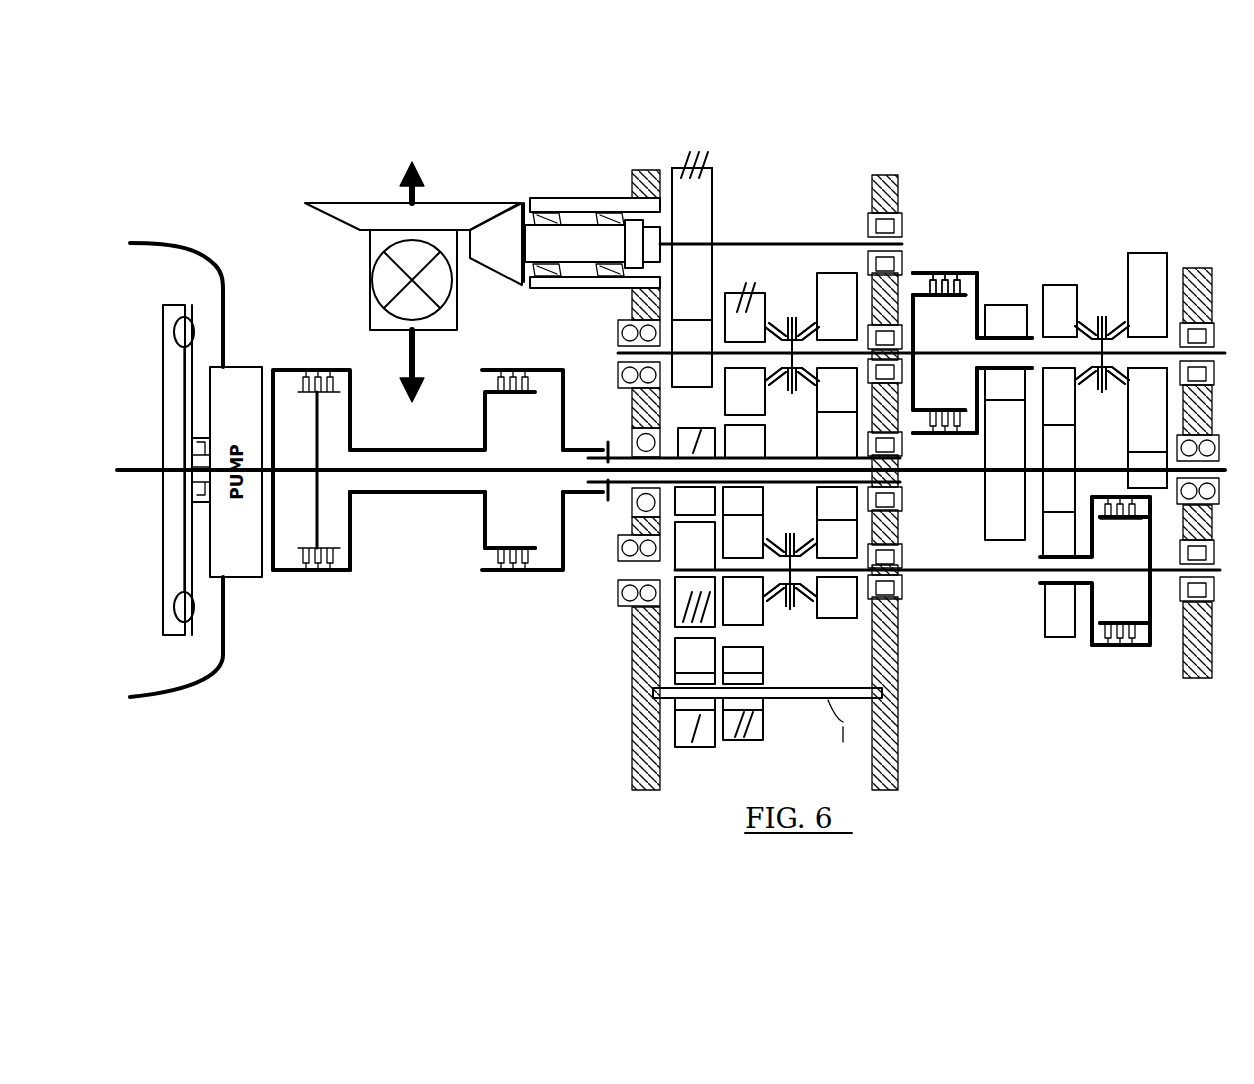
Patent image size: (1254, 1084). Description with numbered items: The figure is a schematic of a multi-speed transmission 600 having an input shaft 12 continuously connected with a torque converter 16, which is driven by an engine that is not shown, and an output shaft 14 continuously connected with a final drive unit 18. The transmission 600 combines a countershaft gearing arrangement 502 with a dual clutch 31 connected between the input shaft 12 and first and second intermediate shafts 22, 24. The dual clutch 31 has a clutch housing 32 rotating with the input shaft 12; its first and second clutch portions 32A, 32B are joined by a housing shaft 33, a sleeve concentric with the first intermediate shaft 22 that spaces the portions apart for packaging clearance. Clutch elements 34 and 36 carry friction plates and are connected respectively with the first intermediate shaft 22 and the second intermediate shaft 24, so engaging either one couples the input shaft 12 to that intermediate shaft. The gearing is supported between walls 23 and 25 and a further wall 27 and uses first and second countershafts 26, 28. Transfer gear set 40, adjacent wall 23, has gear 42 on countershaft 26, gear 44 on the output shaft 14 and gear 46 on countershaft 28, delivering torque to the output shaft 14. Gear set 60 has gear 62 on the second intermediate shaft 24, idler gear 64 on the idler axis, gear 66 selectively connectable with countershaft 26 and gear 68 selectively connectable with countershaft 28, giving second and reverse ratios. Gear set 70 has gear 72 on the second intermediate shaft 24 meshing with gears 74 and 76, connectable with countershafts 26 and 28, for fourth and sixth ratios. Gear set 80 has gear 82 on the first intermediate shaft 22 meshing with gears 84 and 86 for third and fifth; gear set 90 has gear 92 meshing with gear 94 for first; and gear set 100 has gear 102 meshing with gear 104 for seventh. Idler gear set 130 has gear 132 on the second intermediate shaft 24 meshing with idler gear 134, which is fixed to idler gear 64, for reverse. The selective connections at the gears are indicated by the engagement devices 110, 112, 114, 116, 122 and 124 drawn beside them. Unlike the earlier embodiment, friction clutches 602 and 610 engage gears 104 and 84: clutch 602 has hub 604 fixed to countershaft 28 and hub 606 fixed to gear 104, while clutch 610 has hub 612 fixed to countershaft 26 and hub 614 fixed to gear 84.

The input shaft 12 is at (268, 462).
The output shaft 14 is at (826, 240).
The torque converter 16 is at (160, 565).
The final drive unit 18 is at (495, 172).
The first intermediate shaft 22 is at (928, 475).
The wall 23 is at (633, 645).
The second intermediate shaft 24 is at (614, 452).
The wall 25 is at (903, 750).
The first countershaft 26 is at (948, 572).
The housing wall 27 is at (1190, 680).
The second countershaft 28 is at (1040, 352).
The dual clutch 31 is at (322, 592).
The clutch housing 32 is at (372, 507).
The first clutch portion 32A is at (352, 572).
The second clutch portion 32B is at (485, 530).
The housing shaft 33 is at (442, 450).
The first clutch element 34 is at (308, 400).
The second clutch element 36 is at (535, 372).
The transfer gear set 40 is at (717, 153).
The transfer gear 42 is at (695, 574).
The transfer gear 44 is at (692, 244).
The transfer gear 46 is at (692, 353).
The gear set 60 is at (743, 270).
The gear 62 is at (745, 441).
The idler gear 64 is at (743, 660).
The gear 66 is at (743, 556).
The gear 68 is at (745, 391).
The gear set 70 is at (832, 627).
The gear 72 is at (837, 522).
The gear 74 is at (837, 597).
The gear 76 is at (837, 365).
The gear set 80 is at (1056, 649).
The gear 82 is at (1059, 462).
The gear 84 is at (1060, 610).
The gear 86 is at (1060, 311).
The gear set 90 is at (1142, 246).
The gear 92 is at (1136, 462).
The gear 94 is at (1147, 295).
The gear set 100 is at (1008, 296).
The gear 102 is at (1005, 454).
The gear 104 is at (1006, 321).
The bevel gear 110 is at (778, 604).
The bevel gear 112 is at (803, 543).
The bevel gear 114 is at (775, 390).
The bevel gear 116 is at (797, 321).
The bevel gear 122 is at (1092, 396).
The bevel gear 124 is at (1113, 324).
The idler gear set 130 is at (700, 757).
The gear 132 is at (695, 501).
The idler gear 134 is at (695, 655).
The countershaft gearing arrangement 502 is at (1030, 234).
The multi-speed transmission 600 is at (274, 214).
The clutch 602 is at (932, 242).
The clutch element 604 is at (943, 298).
The clutch element 606 is at (958, 272).
The clutch 610 is at (1127, 660).
The clutch element 612 is at (1097, 612).
The clutch element 614 is at (1097, 548).